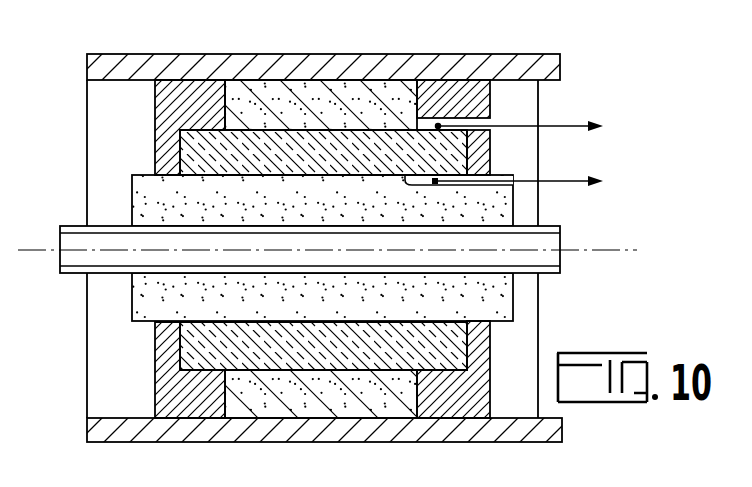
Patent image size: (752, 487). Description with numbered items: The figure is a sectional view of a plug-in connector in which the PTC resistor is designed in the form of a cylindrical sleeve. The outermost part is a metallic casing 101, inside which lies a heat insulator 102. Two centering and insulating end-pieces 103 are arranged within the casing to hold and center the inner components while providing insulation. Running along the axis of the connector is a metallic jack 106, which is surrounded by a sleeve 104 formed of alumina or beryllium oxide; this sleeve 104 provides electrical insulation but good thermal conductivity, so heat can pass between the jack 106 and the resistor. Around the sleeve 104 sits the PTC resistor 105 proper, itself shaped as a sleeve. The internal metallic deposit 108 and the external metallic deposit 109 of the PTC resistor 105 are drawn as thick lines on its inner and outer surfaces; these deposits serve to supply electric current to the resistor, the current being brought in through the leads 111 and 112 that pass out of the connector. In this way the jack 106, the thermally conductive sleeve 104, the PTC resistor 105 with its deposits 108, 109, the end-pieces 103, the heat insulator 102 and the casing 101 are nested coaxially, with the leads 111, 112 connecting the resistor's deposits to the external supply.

The metallic casing 101 is at (268, 63).
The heat insulator 102 is at (327, 90).
The centering and insulating end-pieces 103 is at (481, 97).
The sleeve 104 is at (502, 213).
The PTC resistor 105 is at (458, 150).
The metallic jack 106 is at (76, 255).
The internal metallic deposit 108 is at (236, 175).
The external metallic deposit 109 is at (242, 134).
The lead 111 is at (603, 126).
The lead 112 is at (603, 181).